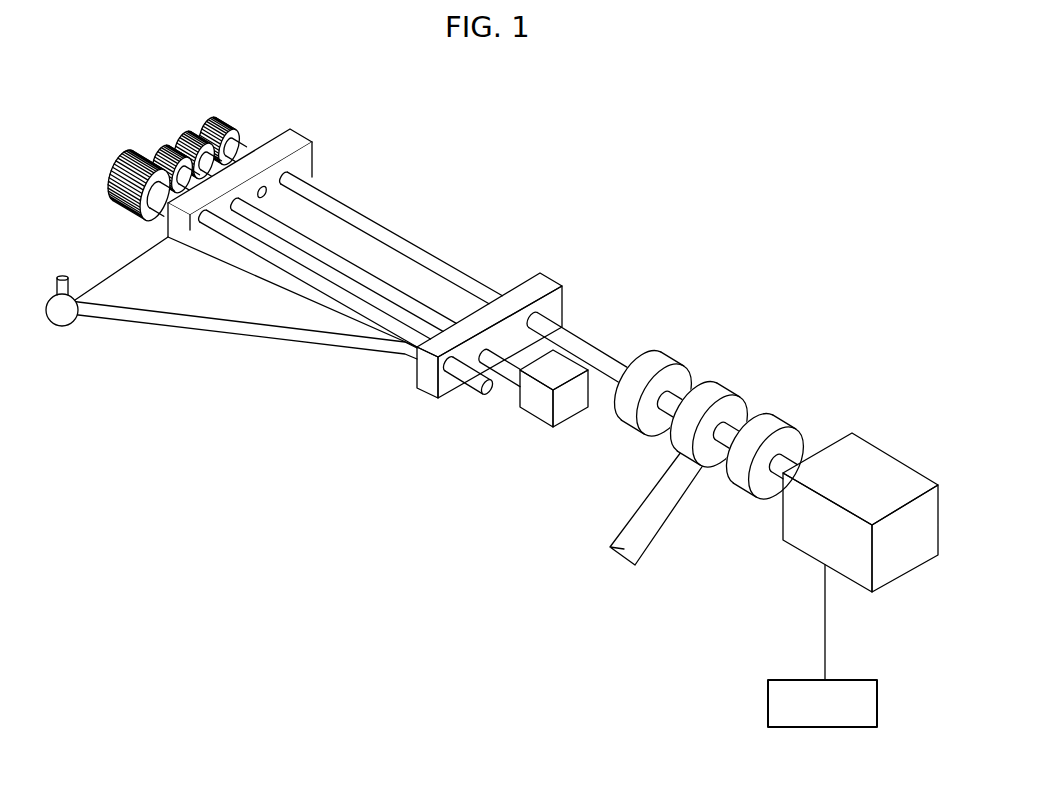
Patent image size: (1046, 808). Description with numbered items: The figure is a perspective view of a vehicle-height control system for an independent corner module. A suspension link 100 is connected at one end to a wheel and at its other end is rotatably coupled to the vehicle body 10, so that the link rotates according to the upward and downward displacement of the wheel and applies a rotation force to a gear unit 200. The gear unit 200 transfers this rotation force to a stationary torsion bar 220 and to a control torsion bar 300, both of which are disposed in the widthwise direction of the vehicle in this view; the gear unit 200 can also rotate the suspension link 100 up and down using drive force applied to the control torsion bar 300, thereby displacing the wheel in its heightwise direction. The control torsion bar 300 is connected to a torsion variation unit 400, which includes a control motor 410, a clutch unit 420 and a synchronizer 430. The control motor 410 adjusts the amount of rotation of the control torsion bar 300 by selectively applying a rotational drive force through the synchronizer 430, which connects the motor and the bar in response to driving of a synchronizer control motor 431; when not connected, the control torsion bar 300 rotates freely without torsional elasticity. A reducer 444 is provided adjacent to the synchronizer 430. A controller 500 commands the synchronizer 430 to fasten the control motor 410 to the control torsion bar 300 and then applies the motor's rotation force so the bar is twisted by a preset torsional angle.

The vehicle body 10 is at (293, 143).
The suspension link 100 is at (178, 297).
The gear unit 200 is at (151, 140).
The stationary torsion bar 220 is at (332, 263).
The control torsion bar 300 is at (400, 243).
The torsion variation unit 400 is at (790, 303).
The control motor 410 is at (882, 462).
The clutch unit 420 is at (780, 427).
The synchronizer 430 is at (720, 392).
The synchronizer control motor 431 is at (608, 547).
The reducer 444 is at (662, 360).
The controller 500 is at (768, 703).